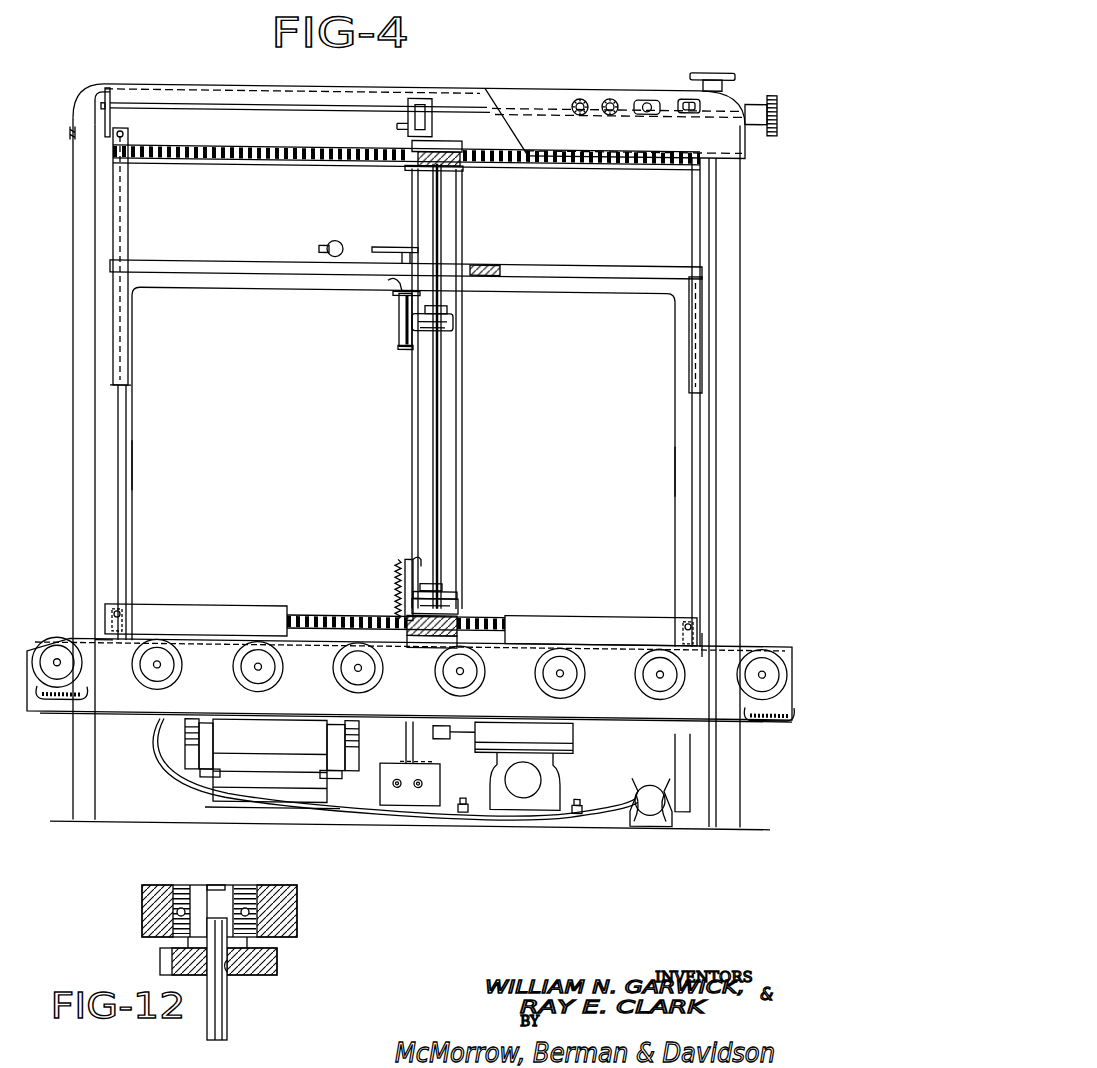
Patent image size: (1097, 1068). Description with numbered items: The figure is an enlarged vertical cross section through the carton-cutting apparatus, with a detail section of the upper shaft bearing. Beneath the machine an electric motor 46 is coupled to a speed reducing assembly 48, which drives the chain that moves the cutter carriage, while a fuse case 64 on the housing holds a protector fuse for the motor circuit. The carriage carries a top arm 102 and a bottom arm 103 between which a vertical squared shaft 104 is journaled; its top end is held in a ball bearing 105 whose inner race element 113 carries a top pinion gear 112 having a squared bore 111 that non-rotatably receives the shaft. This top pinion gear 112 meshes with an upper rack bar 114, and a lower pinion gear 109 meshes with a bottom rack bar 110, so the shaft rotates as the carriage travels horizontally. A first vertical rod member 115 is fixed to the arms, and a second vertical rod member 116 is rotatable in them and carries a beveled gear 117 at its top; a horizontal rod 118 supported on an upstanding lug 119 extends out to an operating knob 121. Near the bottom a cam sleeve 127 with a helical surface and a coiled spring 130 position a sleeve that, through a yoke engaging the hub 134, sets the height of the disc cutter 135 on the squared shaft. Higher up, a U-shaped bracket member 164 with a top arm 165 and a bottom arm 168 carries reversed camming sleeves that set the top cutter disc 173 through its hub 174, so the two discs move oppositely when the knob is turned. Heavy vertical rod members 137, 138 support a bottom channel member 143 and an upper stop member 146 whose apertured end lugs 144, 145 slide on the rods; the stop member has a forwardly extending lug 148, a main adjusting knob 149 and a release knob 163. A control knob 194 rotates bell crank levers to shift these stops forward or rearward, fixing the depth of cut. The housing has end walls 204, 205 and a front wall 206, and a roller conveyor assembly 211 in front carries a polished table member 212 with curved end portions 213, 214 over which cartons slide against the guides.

In FIG. 4, the electric motor 46 is at (277, 743).
In FIG. 4, the speed reducing assembly 48 is at (534, 738).
In FIG. 4, the fuse case 64 is at (656, 780).
In FIG. 4, the top arm 102 is at (458, 137).
In FIG. 12, the top arm 102 is at (290, 893).
In FIG. 4, the bottom arm 103 is at (420, 644).
In FIG. 4, the squared shaft 104 is at (441, 457).
In FIG. 12, the squared shaft 104 is at (223, 1012).
In FIG. 12, the ball bearing 105 is at (265, 888).
In FIG. 4, the pinion gear 109 is at (456, 618).
In FIG. 4, the rack bar 110 is at (310, 612).
In FIG. 12, the squared bore 111 is at (228, 975).
In FIG. 4, the top pinion gear 112 is at (428, 167).
In FIG. 12, the top pinion gear 112 is at (272, 962).
In FIG. 12, the inner race element 113 is at (245, 888).
In FIG. 4, the rack bar 114 is at (262, 158).
In FIG. 4, the first vertical rod member 115 is at (463, 391).
In FIG. 4, the second vertical rod member 116 is at (412, 399).
In FIG. 4, the beveled gear 117 is at (397, 123).
In FIG. 4, the horizontal rod 118 is at (173, 108).
In FIG. 4, the upstanding lug 119 is at (125, 84).
In FIG. 4, the operating knob 121 is at (772, 128).
In FIG. 4, the cam sleeve 127 is at (405, 590).
In FIG. 4, the coiled spring 130 is at (396, 572).
In FIG. 4, the hub 134 is at (442, 580).
In FIG. 4, the disc cutter 135 is at (452, 595).
In FIG. 4, the vertical rod member 137 is at (137, 470).
In FIG. 4, the vertical rod member 138 is at (676, 462).
In FIG. 4, the channel member 143 is at (210, 604).
In FIG. 4, the apertured end lug 144 is at (113, 254).
In FIG. 4, the apertured end lug 145 is at (702, 258).
In FIG. 4, the upper stop member 146 is at (303, 284).
In FIG. 4, the forwardly extending lug 148 is at (472, 260).
In FIG. 4, the main adjusting knob 149 is at (377, 244).
In FIG. 4, the release knob 163 is at (329, 243).
In FIG. 4, the U-shaped bracket member 164 is at (399, 327).
In FIG. 4, the top arm 165 is at (392, 283).
In FIG. 4, the bottom arm 168 is at (400, 354).
In FIG. 4, the top cutter disc 173 is at (455, 302).
In FIG. 4, the hub 174 is at (453, 322).
In FIG. 4, the control knob 194 is at (703, 66).
In FIG. 4, the end wall 204 is at (740, 536).
In FIG. 4, the end wall 205 is at (73, 538).
In FIG. 4, the front wall 206 is at (249, 466).
In FIG. 4, the roller conveyor assembly 211 is at (748, 658).
In FIG. 4, the table member 212 is at (575, 645).
In FIG. 4, the curved end portion 213 is at (705, 638).
In FIG. 4, the curved end portion 214 is at (100, 640).